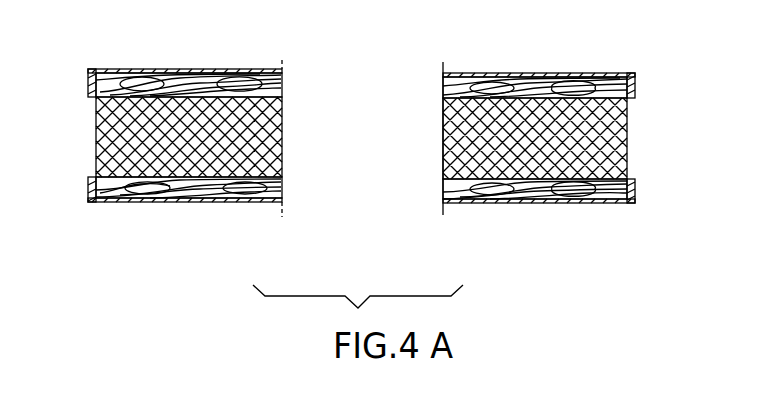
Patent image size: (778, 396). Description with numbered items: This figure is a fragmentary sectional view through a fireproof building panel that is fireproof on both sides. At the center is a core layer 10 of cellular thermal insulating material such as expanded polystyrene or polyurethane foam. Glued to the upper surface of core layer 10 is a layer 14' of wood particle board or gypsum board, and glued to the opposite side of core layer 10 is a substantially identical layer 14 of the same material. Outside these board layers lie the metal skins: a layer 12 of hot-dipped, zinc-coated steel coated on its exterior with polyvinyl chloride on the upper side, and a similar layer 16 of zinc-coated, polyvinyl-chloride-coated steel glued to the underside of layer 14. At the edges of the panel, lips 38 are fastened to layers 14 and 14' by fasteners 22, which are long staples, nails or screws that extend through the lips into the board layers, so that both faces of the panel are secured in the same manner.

The core layer 10 is at (282, 128).
The layer 12 is at (128, 72).
The layer 14 is at (361, 183).
The layer 14' is at (361, 60).
The layer 16 is at (207, 201).
The fasteners 22 is at (113, 193).
The lips 38 is at (88, 190).